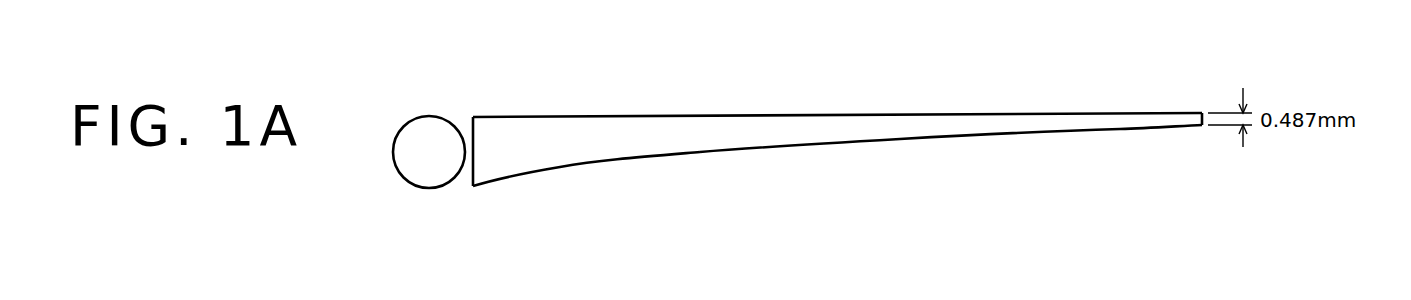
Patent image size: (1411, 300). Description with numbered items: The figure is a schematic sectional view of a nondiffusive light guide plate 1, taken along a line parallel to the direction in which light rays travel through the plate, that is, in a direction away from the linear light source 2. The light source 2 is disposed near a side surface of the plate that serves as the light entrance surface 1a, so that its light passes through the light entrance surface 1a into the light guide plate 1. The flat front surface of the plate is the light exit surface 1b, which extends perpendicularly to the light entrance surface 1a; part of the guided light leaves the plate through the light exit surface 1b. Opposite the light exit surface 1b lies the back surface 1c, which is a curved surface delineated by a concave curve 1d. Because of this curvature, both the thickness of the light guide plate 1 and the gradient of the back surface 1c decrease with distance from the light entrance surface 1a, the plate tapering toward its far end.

The nondiffusive light guide plate 1 is at (804, 144).
The light entrance surface 1a is at (470, 184).
The light exit surface 1b is at (793, 115).
The back surface 1c is at (778, 146).
The concave curve 1d is at (640, 165).
The linear light source 2 is at (435, 155).